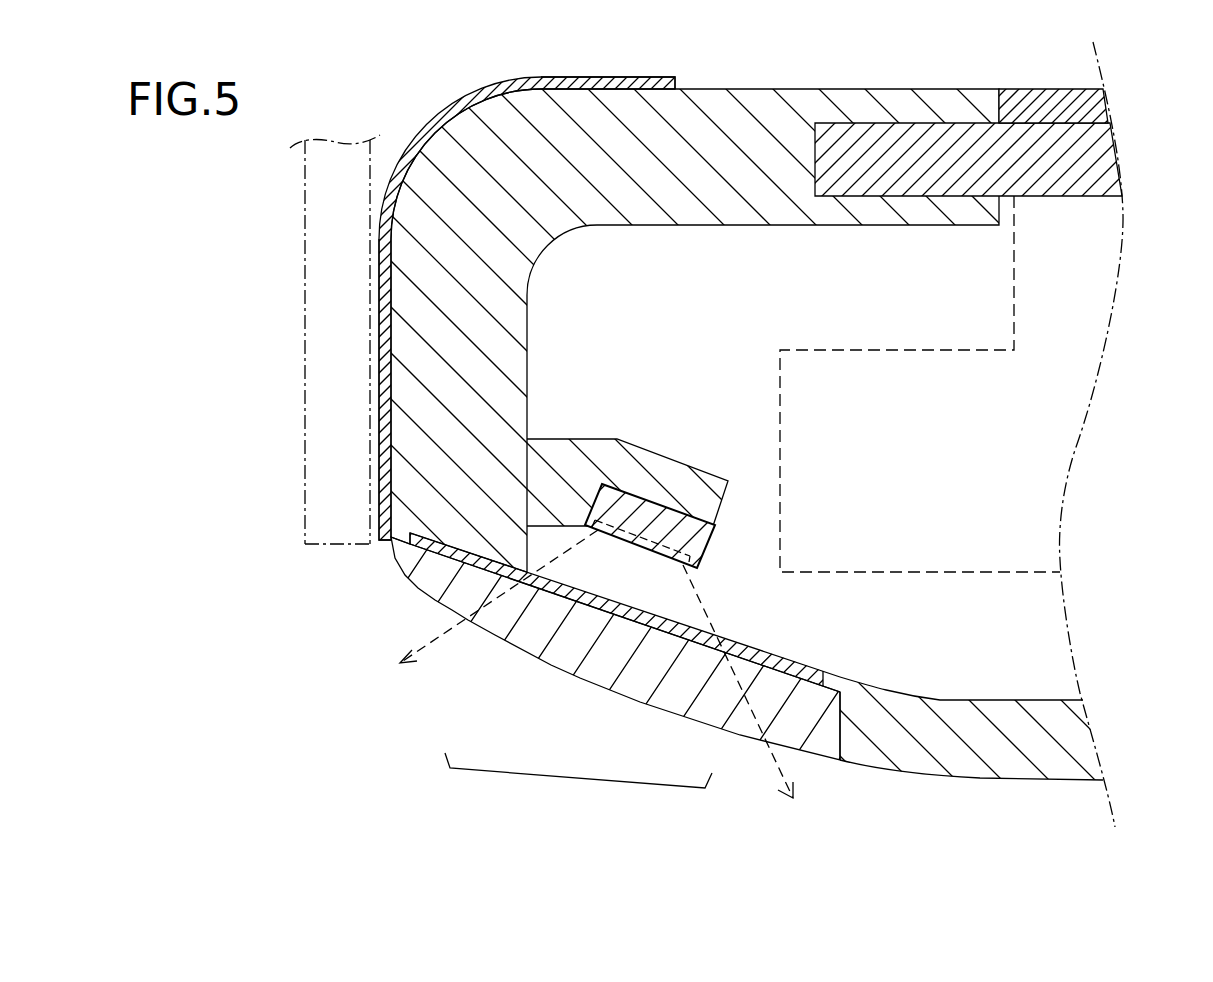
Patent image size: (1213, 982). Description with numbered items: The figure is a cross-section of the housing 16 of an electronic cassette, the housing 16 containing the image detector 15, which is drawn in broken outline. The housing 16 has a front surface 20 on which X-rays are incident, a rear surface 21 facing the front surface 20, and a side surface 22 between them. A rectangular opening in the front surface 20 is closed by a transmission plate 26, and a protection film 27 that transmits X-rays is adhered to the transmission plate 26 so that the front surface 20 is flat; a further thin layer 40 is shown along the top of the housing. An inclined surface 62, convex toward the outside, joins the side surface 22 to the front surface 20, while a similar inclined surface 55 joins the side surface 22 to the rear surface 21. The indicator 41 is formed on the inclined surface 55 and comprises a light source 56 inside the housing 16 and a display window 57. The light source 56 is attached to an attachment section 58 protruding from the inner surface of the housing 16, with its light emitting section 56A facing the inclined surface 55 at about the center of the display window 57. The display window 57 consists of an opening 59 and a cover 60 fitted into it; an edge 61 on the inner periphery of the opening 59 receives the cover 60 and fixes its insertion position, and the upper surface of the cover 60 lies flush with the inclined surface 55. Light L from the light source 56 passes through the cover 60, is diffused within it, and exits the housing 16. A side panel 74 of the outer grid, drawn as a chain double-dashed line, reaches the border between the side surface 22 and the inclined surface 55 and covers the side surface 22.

The image detector 15 is at (925, 350).
The housing 16 is at (1000, 778).
The front surface 20 is at (1053, 89).
The rear surface 21 is at (1100, 800).
The side surface 22 is at (385, 290).
The transmission plate 26 is at (1105, 163).
The protection film 27 is at (1097, 108).
The top sheet 40 is at (675, 85).
The indicator 41 is at (430, 718).
The inclined surface 55 is at (845, 765).
The light source 56 is at (698, 548).
The light emitting section 56A is at (638, 548).
The display window 57 is at (578, 782).
The attachment section 58 is at (590, 448).
The opening 59 is at (583, 595).
The cover 60 is at (643, 705).
The edge 61 is at (828, 676).
The inclined surface 62 is at (425, 132).
The side panel 74 is at (308, 175).
The light L is at (445, 636).